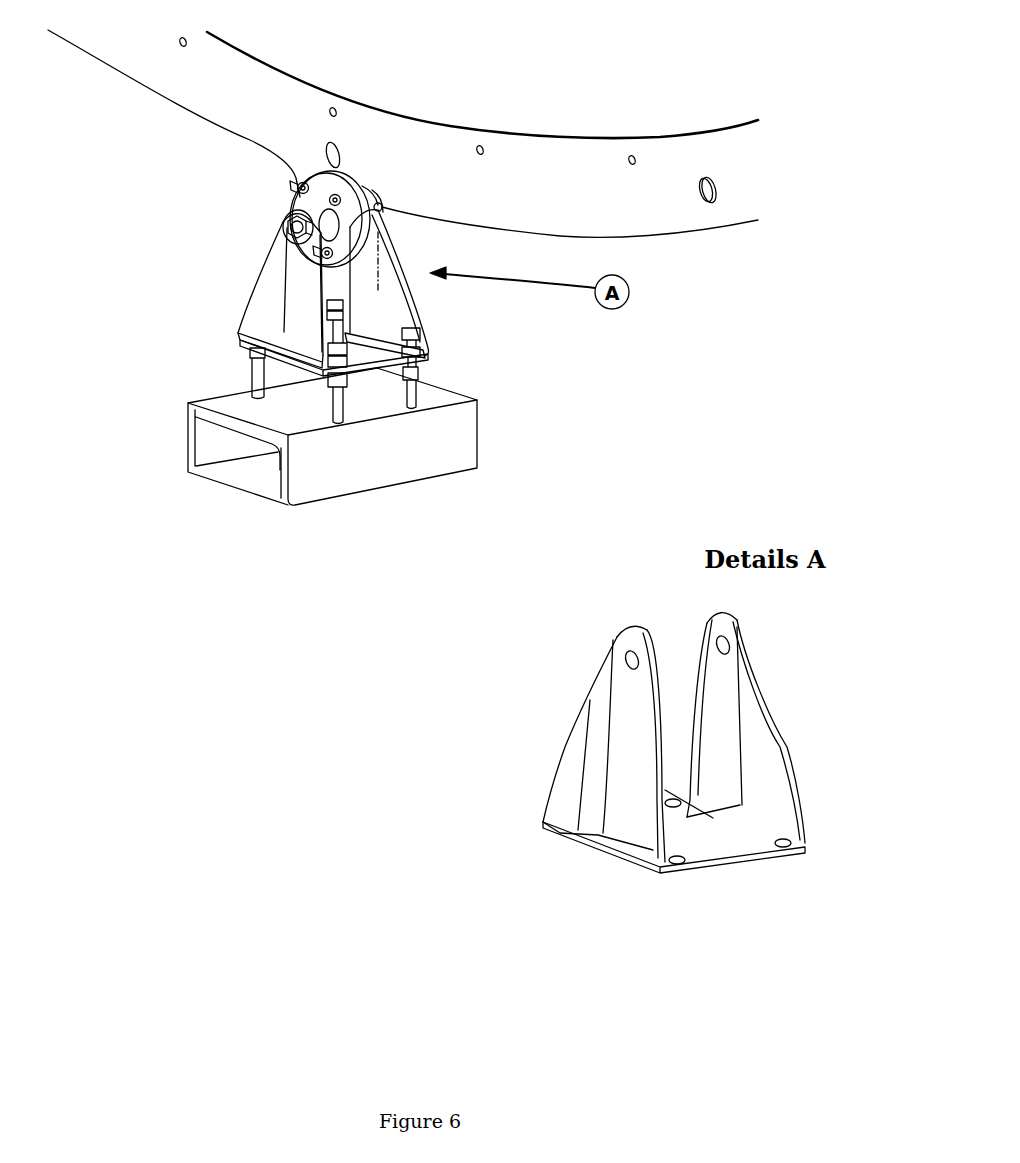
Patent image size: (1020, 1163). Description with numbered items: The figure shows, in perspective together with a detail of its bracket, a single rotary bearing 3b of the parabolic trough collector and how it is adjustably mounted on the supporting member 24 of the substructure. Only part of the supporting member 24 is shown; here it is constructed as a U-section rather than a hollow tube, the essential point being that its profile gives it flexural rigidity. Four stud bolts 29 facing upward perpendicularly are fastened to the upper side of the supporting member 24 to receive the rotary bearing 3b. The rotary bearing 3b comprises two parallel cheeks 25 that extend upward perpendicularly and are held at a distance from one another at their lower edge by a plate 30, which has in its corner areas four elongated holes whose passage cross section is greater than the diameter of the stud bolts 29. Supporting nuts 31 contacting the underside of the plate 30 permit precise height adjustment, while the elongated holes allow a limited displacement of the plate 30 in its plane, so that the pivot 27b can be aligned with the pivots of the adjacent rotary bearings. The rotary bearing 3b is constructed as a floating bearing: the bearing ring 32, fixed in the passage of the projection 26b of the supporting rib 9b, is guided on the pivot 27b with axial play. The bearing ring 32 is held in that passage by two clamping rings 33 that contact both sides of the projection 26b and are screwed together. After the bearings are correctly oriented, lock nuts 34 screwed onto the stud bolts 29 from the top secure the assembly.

In FIG. 6, the rotary bearing 3b is at (148, 208).
In FIG. 6, the supporting rib 9b is at (530, 155).
In FIG. 6, the supporting member 24 is at (447, 453).
In FIG. 6, the cheeks 25 is at (262, 297).
In FIG. 6a, the cheeks 25 is at (590, 773).
In FIG. 6, the projection 26b is at (382, 210).
In FIG. 6, the pivot 27b is at (340, 220).
In FIG. 6, the stud bolts 29 is at (430, 392).
In FIG. 6, the plate 30 is at (357, 343).
In FIG. 6a, the plate 30 is at (713, 860).
In FIG. 6, the supporting nuts 31 is at (248, 340).
In FIG. 6, the bearing ring 32 is at (380, 207).
In FIG. 6, the clamping rings 33 is at (340, 173).
In FIG. 6, the lock nuts 34 is at (417, 350).